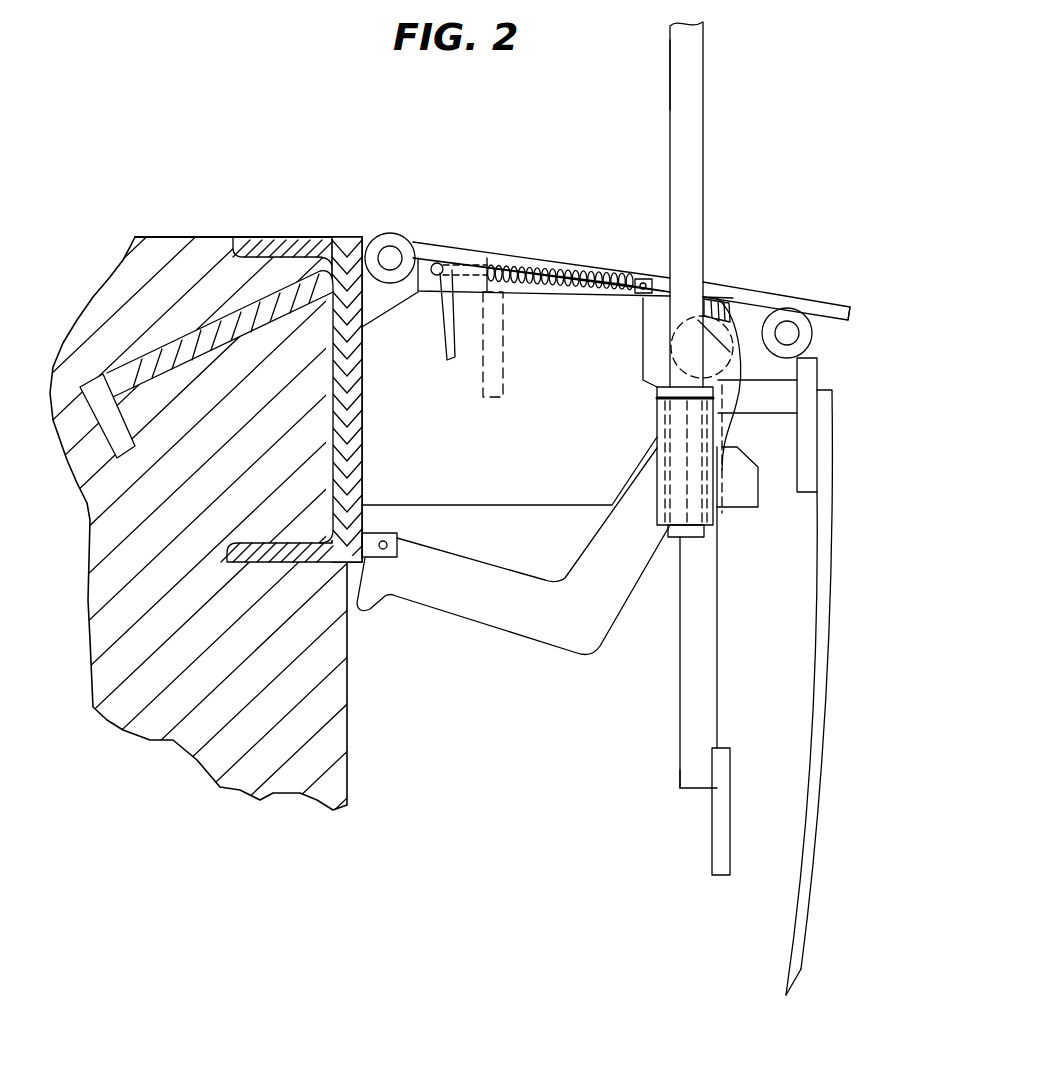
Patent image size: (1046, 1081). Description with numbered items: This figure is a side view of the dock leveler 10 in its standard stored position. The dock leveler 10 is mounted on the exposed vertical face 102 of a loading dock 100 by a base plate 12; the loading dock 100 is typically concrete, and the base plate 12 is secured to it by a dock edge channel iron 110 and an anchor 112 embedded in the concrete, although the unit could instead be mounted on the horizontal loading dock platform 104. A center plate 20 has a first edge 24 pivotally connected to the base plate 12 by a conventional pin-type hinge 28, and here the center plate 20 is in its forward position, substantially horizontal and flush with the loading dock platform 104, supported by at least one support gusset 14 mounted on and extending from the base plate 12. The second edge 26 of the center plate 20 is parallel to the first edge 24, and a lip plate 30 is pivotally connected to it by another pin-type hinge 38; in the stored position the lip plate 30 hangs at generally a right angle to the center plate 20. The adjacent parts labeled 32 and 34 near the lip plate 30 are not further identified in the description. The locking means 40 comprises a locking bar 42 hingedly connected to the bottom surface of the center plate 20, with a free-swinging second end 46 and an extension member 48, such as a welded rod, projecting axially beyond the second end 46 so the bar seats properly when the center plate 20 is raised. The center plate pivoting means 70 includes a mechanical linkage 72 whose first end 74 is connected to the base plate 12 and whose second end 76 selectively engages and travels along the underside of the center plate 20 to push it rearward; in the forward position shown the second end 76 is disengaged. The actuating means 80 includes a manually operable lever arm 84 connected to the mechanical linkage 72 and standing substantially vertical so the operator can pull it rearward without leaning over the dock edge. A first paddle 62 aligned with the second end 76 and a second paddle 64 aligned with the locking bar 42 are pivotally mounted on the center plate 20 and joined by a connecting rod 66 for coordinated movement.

The dock leveler 10 is at (811, 184).
The base plate 12 is at (355, 240).
The support gusset 14 is at (527, 487).
The center plate 20 is at (787, 300).
The first edge 24 is at (450, 242).
The second edge 26 is at (850, 307).
The pin-type hinge 28 is at (395, 233).
The lip plate 30 is at (830, 567).
The blade support bar 32 is at (833, 393).
The blade tip 34 is at (793, 992).
The pin-type hinge 38 is at (812, 334).
The locking means 40 is at (723, 618).
The locking bar 42 is at (685, 680).
The second end 46 is at (680, 790).
The extension member 48 is at (712, 850).
The first paddle 62 is at (440, 343).
The second paddle 64 is at (512, 295).
The connecting rod 66 is at (443, 266).
The center plate pivoting means 70 is at (625, 473).
The mechanical linkage 72 is at (514, 612).
The first end 74 is at (368, 610).
The second end 76 is at (737, 310).
The actuating means 80 is at (662, 170).
The lever arm 84 is at (680, 98).
The loading dock 100 is at (212, 192).
The exposed vertical face 102 is at (350, 745).
The loading dock platform 104 is at (176, 237).
The dock edge channel iron 110 is at (232, 562).
The anchor 112 is at (205, 337).